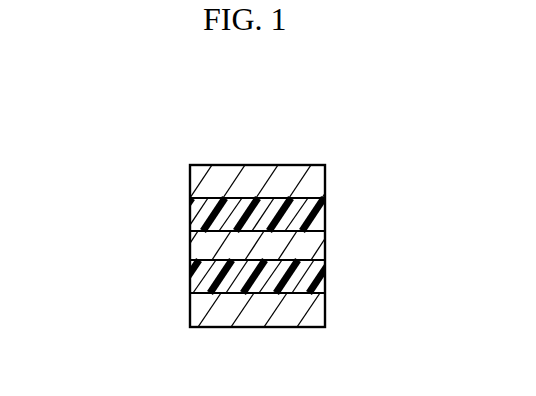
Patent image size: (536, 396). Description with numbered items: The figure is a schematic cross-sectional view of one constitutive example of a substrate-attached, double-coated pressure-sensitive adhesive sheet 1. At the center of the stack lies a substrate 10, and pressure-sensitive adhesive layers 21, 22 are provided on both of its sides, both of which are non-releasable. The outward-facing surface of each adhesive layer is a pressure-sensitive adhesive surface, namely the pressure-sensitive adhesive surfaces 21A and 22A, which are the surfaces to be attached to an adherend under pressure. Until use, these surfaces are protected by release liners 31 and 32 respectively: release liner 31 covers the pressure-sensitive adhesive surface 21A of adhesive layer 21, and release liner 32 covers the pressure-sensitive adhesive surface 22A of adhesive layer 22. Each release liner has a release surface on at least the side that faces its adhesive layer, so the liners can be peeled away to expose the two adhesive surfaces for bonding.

The pressure-sensitive adhesive sheet 1 is at (300, 125).
The release liner 32 is at (325, 181).
The pressure-sensitive adhesive layer 22 is at (325, 222).
The substrate 10 is at (325, 253).
The pressure-sensitive adhesive layer 21 is at (325, 283).
The release liner 31 is at (325, 317).
The pressure-sensitive adhesive surface 22A is at (214, 198).
The pressure-sensitive adhesive surface 21A is at (207, 295).